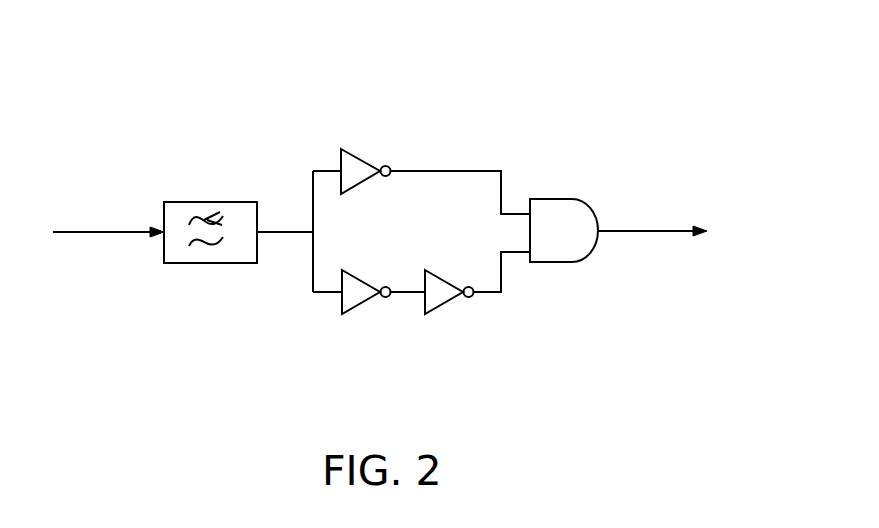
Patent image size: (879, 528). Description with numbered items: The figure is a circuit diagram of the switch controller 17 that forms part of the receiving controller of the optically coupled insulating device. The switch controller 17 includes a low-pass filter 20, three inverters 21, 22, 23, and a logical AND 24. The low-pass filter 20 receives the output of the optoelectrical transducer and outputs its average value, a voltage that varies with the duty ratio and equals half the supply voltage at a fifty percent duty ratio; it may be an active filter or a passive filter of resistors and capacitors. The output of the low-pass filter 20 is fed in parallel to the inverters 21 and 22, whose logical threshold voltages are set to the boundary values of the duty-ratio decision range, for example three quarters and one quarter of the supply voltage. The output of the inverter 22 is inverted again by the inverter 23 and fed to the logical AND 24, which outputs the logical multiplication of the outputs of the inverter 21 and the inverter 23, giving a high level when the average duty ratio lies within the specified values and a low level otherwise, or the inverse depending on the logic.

The switch controller 17 is at (684, 91).
The low-pass filter 20 is at (207, 201).
The inverter 21 is at (362, 150).
The inverter 22 is at (363, 309).
The inverter 23 is at (446, 309).
The logical AND 24 is at (553, 198).